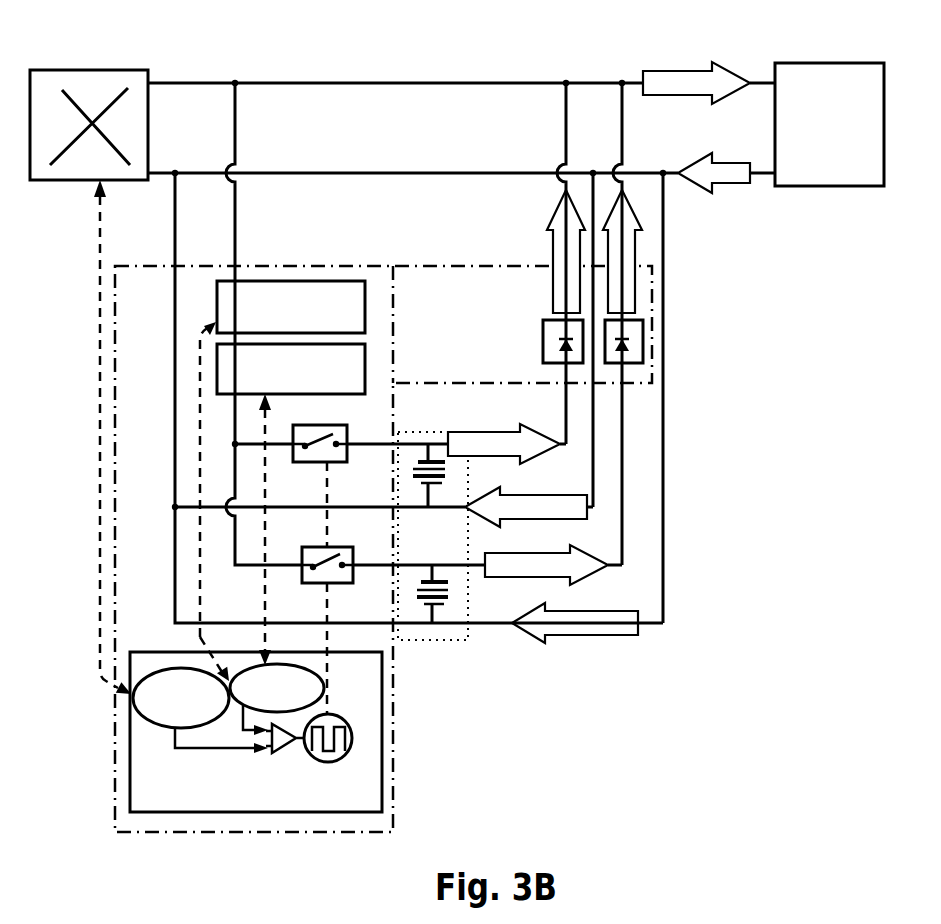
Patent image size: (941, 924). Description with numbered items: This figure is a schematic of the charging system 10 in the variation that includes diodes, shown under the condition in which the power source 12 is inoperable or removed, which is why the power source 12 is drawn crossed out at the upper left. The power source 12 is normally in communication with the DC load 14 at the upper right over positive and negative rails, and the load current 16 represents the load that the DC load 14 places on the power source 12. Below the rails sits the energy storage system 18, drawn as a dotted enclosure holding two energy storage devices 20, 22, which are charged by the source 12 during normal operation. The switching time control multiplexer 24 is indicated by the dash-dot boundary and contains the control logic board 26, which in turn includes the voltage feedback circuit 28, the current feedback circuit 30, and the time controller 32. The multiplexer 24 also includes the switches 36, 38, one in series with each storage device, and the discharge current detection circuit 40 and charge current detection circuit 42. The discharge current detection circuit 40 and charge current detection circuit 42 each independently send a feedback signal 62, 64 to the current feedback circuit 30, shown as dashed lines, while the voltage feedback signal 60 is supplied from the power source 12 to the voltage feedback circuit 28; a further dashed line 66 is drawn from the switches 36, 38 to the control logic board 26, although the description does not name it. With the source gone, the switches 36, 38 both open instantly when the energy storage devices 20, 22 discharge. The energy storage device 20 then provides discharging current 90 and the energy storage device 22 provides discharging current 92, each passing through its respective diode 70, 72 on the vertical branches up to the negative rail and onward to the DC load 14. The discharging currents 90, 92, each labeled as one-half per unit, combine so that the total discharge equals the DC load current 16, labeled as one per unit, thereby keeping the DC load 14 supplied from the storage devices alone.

The charging system 10 is at (461, 50).
The power source 12 is at (143, 70).
The DC load 14 is at (790, 63).
The load current 16 is at (655, 71).
The energy storage system 18 is at (468, 641).
The energy storage device 20 is at (445, 469).
The energy storage device 22 is at (450, 594).
The switching time control multiplexer 24 is at (116, 462).
The control logic board 26 is at (165, 652).
The voltage feedback circuit 28 is at (150, 722).
The current feedback circuit 30 is at (307, 672).
The time controller 32 is at (336, 716).
The switch 36 is at (323, 425).
The switch 38 is at (327, 547).
The discharge current detection circuit 40 is at (365, 308).
The charge current detection circuit 42 is at (365, 357).
The voltage feedback signal 60 is at (98, 222).
The feedback signal 62 is at (200, 420).
The feedback signal 64 is at (263, 604).
The switch control line 66 is at (325, 606).
The diode 70 is at (541, 320).
The diode 72 is at (645, 323).
The discharging current 90 is at (552, 244).
The discharging current 92 is at (637, 249).